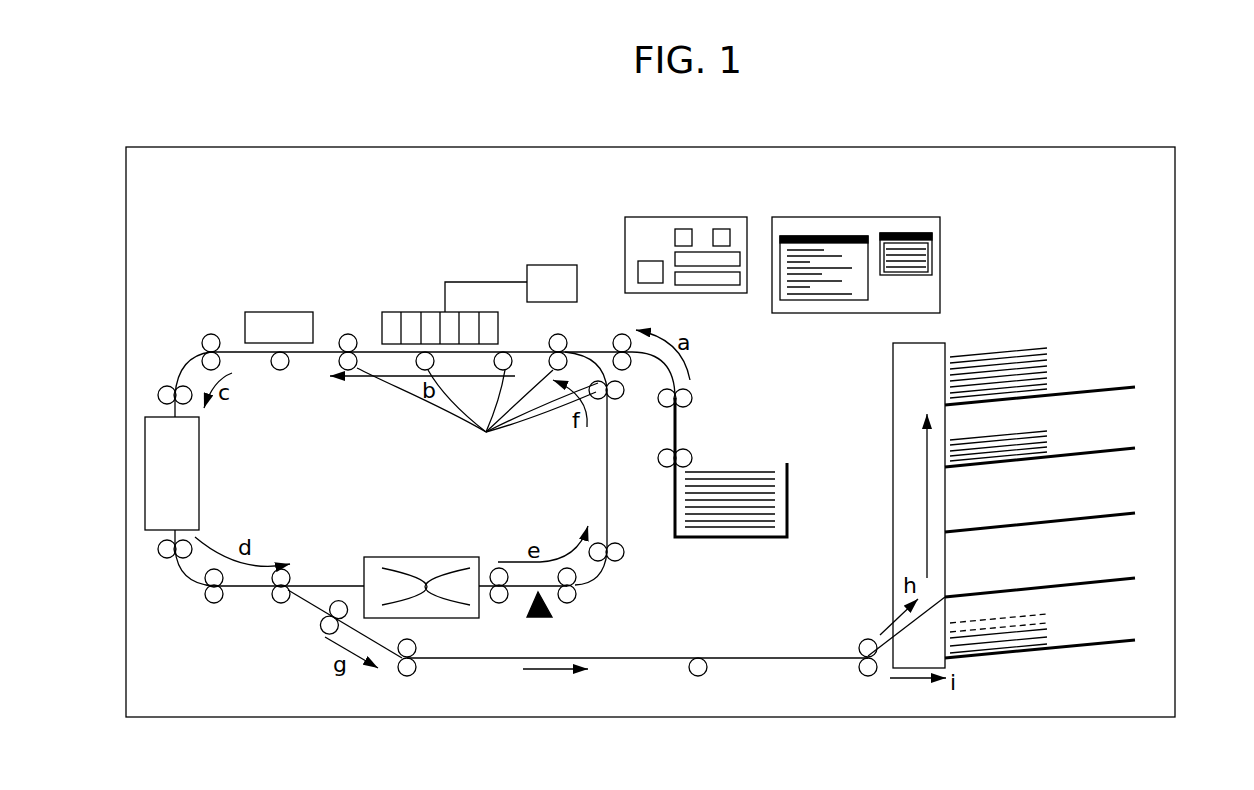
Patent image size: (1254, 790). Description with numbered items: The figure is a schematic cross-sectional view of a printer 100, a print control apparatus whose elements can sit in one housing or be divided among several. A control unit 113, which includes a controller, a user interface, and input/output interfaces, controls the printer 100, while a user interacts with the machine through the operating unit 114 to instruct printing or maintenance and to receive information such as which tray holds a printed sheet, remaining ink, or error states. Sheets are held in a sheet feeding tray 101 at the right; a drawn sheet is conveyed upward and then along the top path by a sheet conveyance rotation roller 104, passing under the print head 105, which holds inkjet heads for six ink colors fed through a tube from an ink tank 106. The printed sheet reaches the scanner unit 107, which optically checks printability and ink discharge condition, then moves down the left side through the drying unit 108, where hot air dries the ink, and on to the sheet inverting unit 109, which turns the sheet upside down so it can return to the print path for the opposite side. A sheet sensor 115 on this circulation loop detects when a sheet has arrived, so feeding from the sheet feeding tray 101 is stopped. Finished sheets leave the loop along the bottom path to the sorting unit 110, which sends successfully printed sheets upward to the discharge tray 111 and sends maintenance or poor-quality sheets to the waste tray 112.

The printer 100 is at (261, 147).
The sheet feeding tray 101 is at (787, 488).
The sheet conveyance rotation roller 104 is at (477, 415).
The print head 105 is at (410, 312).
The ink tank 106 is at (552, 265).
The scanner unit 107 is at (263, 312).
The drying unit 108 is at (199, 455).
The sheet inverting unit 109 is at (423, 557).
The sorting unit 110 is at (893, 370).
The discharge tray 111 is at (1135, 387).
The waste tray 112 is at (1120, 642).
The control unit 113 is at (660, 217).
The operating unit 114 is at (940, 245).
The sheet sensor 115 is at (552, 612).